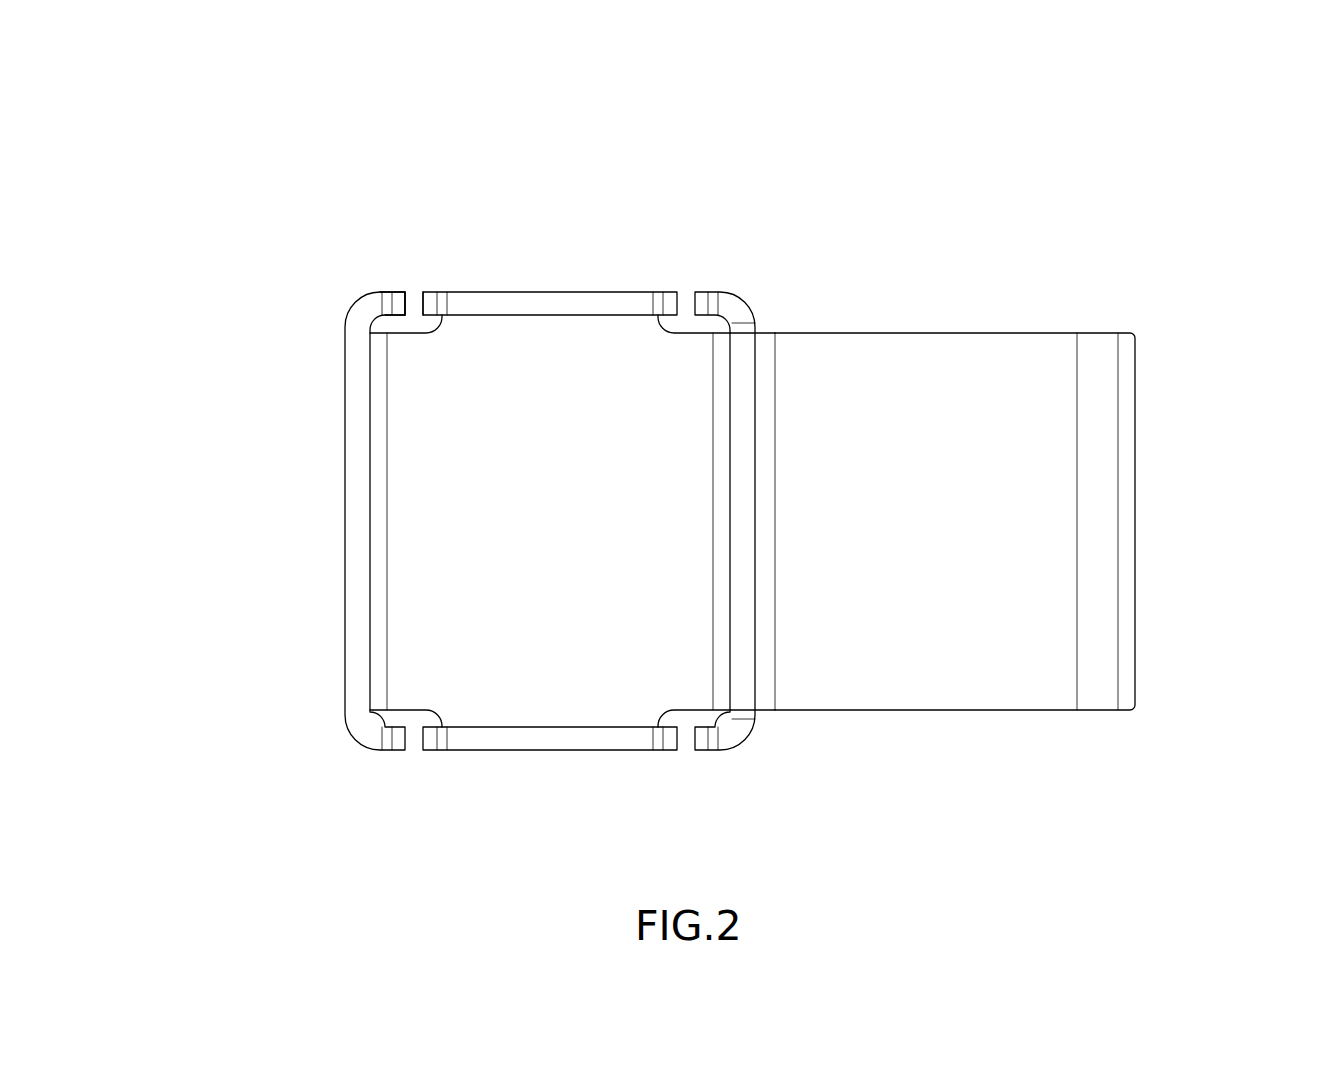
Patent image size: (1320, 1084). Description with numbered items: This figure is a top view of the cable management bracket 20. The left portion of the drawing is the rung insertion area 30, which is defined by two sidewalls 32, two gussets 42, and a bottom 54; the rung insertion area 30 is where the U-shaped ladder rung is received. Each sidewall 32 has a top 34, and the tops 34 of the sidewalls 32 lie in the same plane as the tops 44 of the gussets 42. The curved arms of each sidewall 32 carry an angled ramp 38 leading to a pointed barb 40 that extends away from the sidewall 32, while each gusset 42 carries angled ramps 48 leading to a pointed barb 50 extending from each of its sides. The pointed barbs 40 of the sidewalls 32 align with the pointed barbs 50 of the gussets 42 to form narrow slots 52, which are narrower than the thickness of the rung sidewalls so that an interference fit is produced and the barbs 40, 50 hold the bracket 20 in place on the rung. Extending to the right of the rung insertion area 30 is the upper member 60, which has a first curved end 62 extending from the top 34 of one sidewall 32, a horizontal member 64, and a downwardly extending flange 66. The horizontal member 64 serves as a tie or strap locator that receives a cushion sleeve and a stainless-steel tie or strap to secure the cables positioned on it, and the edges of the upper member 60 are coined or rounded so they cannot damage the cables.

The bracket 20 is at (267, 123).
The rung insertion area 30 is at (279, 333).
The sidewall 32 is at (345, 458).
The top 34 is at (360, 555).
The angled ramp 38 is at (400, 302).
The pointed barb 40 is at (400, 302).
The gusset 42 is at (550, 752).
The top 44 is at (575, 305).
The angled ramp 48 is at (428, 302).
The pointed barb 50 is at (423, 302).
The narrow slot 52 is at (687, 307).
The bottom 54 is at (465, 642).
The upper member 60 is at (1145, 273).
The first curved end 62 is at (753, 385).
The horizontal member 64 is at (888, 385).
The downwardly extending flange 66 is at (1097, 472).